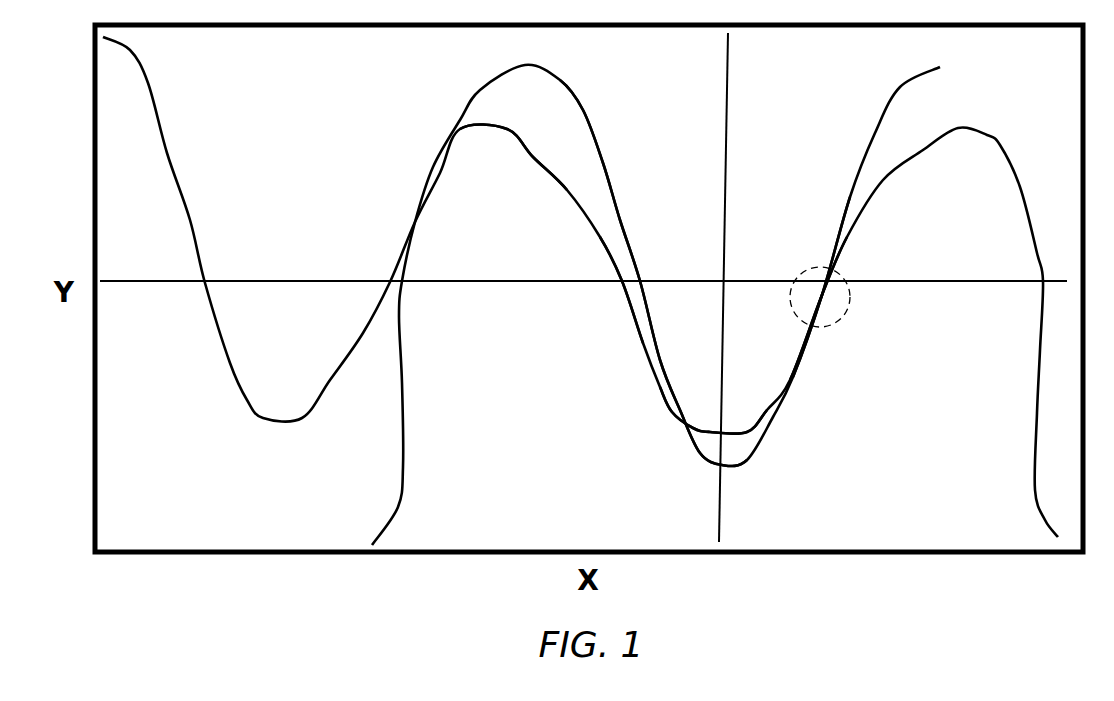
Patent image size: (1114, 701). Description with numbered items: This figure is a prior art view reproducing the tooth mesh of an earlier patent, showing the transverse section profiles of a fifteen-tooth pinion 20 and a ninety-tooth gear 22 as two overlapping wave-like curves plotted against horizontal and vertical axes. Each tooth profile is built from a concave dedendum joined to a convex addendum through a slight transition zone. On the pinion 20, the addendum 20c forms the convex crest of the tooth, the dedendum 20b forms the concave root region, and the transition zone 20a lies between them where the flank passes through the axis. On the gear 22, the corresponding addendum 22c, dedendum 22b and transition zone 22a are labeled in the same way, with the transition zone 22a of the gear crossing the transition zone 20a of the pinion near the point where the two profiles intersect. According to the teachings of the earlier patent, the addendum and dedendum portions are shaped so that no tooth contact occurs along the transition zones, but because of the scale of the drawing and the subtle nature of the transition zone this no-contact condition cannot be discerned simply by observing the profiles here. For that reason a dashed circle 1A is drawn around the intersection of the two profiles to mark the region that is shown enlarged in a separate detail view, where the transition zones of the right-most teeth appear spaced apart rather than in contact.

The pinion 20 is at (1035, 495).
The transition zone 20a is at (621, 289).
The dedendum 20b is at (670, 418).
The addendum 20c is at (547, 163).
The gear 22 is at (875, 135).
The transition zone 22a is at (638, 267).
The dedendum 22b is at (602, 162).
The addendum 22c is at (673, 380).
The enlarged detail region 1A is at (826, 327).